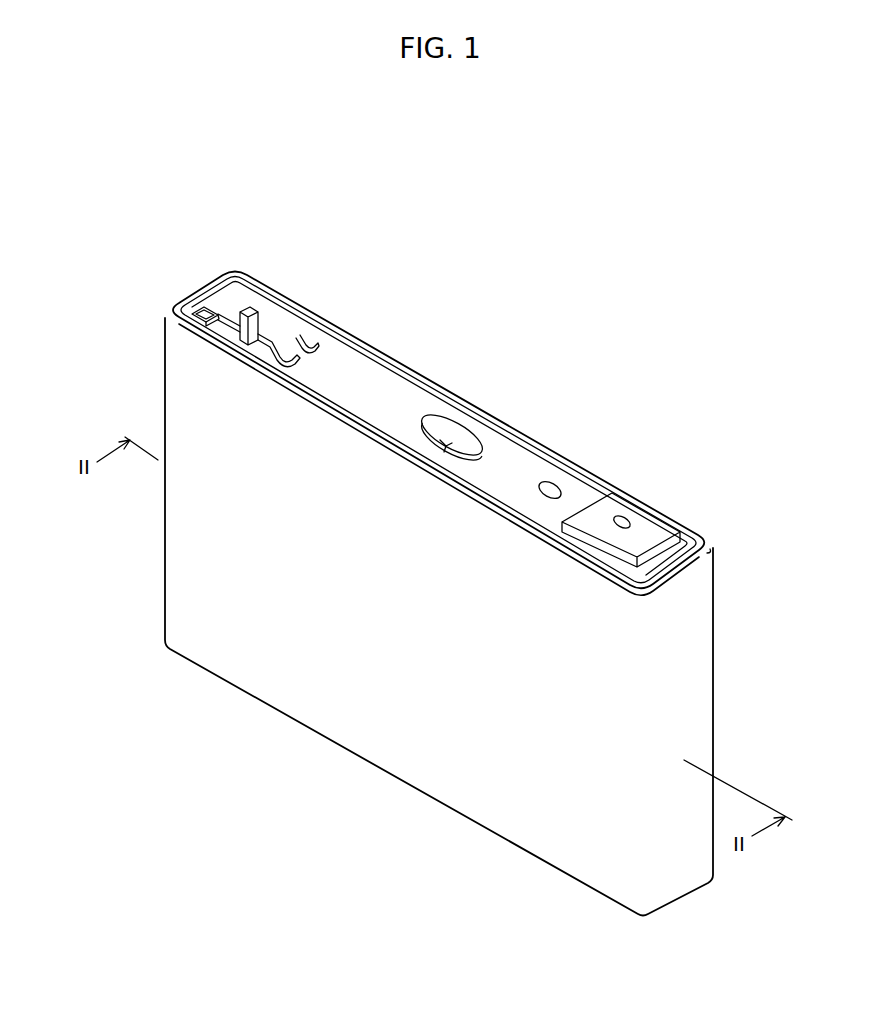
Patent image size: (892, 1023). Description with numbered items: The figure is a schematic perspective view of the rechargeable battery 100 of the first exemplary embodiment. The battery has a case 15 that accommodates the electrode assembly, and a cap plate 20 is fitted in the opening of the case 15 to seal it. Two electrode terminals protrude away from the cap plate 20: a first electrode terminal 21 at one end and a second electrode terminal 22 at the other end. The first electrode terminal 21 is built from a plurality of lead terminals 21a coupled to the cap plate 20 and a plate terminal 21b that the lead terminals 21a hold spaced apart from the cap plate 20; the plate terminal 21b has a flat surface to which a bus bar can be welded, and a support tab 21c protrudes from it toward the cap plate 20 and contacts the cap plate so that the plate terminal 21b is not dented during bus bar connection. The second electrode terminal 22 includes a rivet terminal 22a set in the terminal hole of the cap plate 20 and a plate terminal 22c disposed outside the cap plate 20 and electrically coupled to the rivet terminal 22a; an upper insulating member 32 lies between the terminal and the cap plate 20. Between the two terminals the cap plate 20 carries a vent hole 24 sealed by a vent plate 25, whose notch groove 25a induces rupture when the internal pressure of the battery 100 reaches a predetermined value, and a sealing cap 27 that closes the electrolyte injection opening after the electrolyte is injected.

The rechargeable battery 100 is at (522, 285).
The case 15 is at (373, 725).
The cap plate 20 is at (388, 382).
The first electrode terminal 21 is at (253, 311).
The lead terminals 21a is at (203, 314).
The plate terminal 21b is at (243, 298).
The support tab 21c is at (245, 339).
The second electrode terminal 22 is at (671, 529).
The rivet terminal 22a is at (627, 523).
The plate terminal 22c is at (713, 542).
The vent hole 24 is at (440, 421).
The vent plate 25 is at (499, 396).
The notch groove 25a is at (470, 450).
The sealing cap 27 is at (556, 487).
The upper insulating member 32 is at (663, 557).